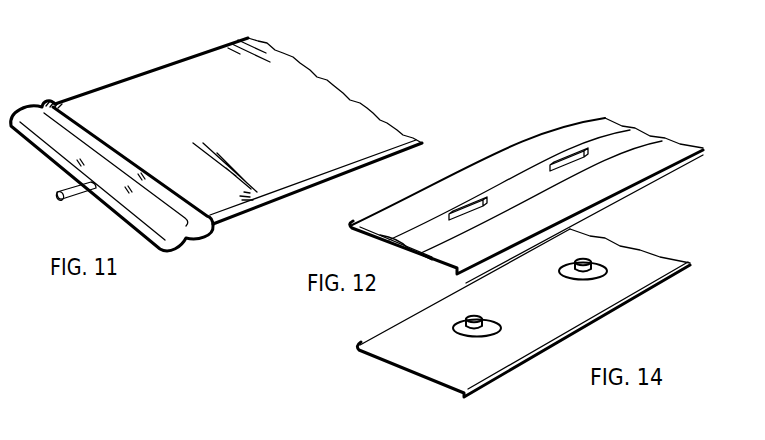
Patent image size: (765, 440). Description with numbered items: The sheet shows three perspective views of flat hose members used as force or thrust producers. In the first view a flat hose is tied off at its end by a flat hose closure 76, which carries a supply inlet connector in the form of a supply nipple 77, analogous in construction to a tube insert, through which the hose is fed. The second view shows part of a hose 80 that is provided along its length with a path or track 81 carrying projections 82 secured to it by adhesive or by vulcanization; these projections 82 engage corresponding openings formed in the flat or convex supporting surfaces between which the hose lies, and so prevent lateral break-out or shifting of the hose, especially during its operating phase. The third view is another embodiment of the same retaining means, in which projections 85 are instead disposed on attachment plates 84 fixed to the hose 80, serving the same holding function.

In FIG. 11, the flat hose closure 76 is at (50, 113).
In FIG. 11, the supply nipple 77 is at (56, 197).
In FIG. 12, the hose 80 is at (513, 168).
In FIG. 14, the hose 80 is at (402, 342).
In FIG. 12, the path or track 81 is at (595, 142).
In FIG. 12, the projections 82 is at (469, 206).
In FIG. 14, the attachment plates 84 is at (595, 277).
In FIG. 14, the projections 85 is at (586, 261).